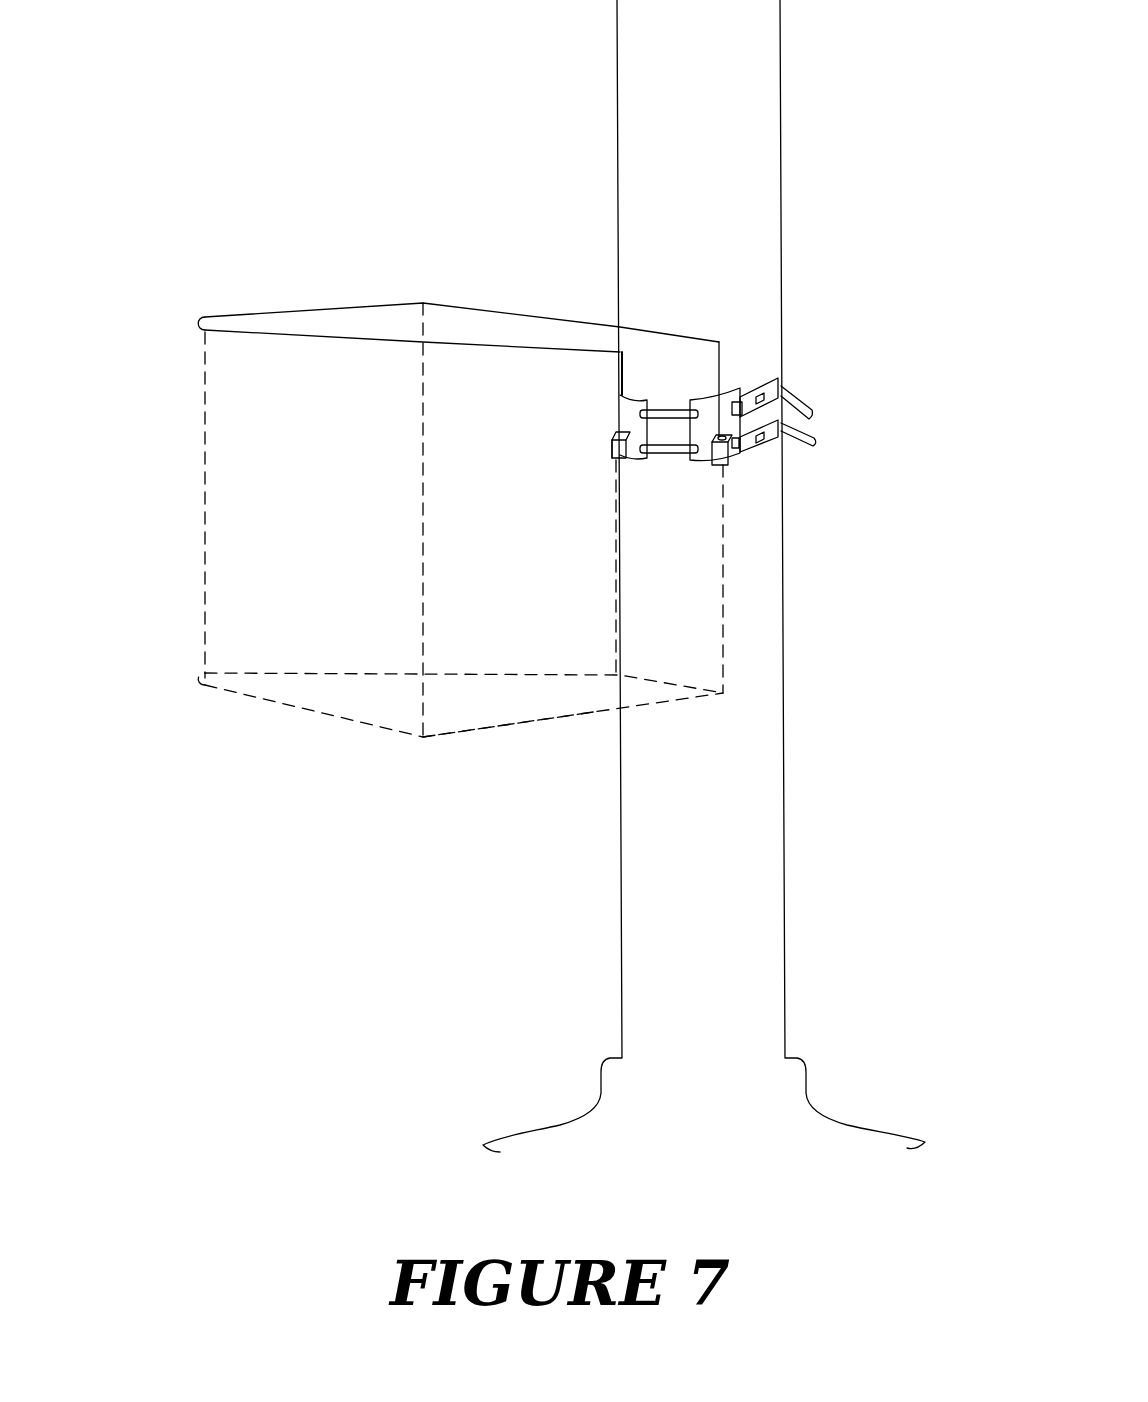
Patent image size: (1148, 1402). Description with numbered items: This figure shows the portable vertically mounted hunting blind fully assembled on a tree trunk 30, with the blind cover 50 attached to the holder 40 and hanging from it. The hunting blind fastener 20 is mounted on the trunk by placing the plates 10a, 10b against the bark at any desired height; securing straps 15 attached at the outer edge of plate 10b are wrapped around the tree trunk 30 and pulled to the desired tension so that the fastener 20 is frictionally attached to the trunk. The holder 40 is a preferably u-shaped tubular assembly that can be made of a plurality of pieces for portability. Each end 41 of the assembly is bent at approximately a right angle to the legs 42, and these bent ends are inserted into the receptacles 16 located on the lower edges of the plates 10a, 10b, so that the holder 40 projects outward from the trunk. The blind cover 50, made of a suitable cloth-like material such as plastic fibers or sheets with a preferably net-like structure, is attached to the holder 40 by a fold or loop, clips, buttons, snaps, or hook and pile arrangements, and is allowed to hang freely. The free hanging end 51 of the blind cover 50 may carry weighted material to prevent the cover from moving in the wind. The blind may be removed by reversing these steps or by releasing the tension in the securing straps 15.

The tree trunk 30 is at (711, 82).
The plate 10a is at (737, 360).
The plate 10b is at (632, 383).
The hunting blind fastener 20 is at (830, 405).
The securing straps 15 is at (810, 413).
The receptacles 16 is at (727, 463).
The holder 40 is at (307, 308).
The end 41 is at (497, 311).
The legs 42 is at (617, 385).
The blind cover 50 is at (285, 542).
The free hanging end 51 is at (508, 725).